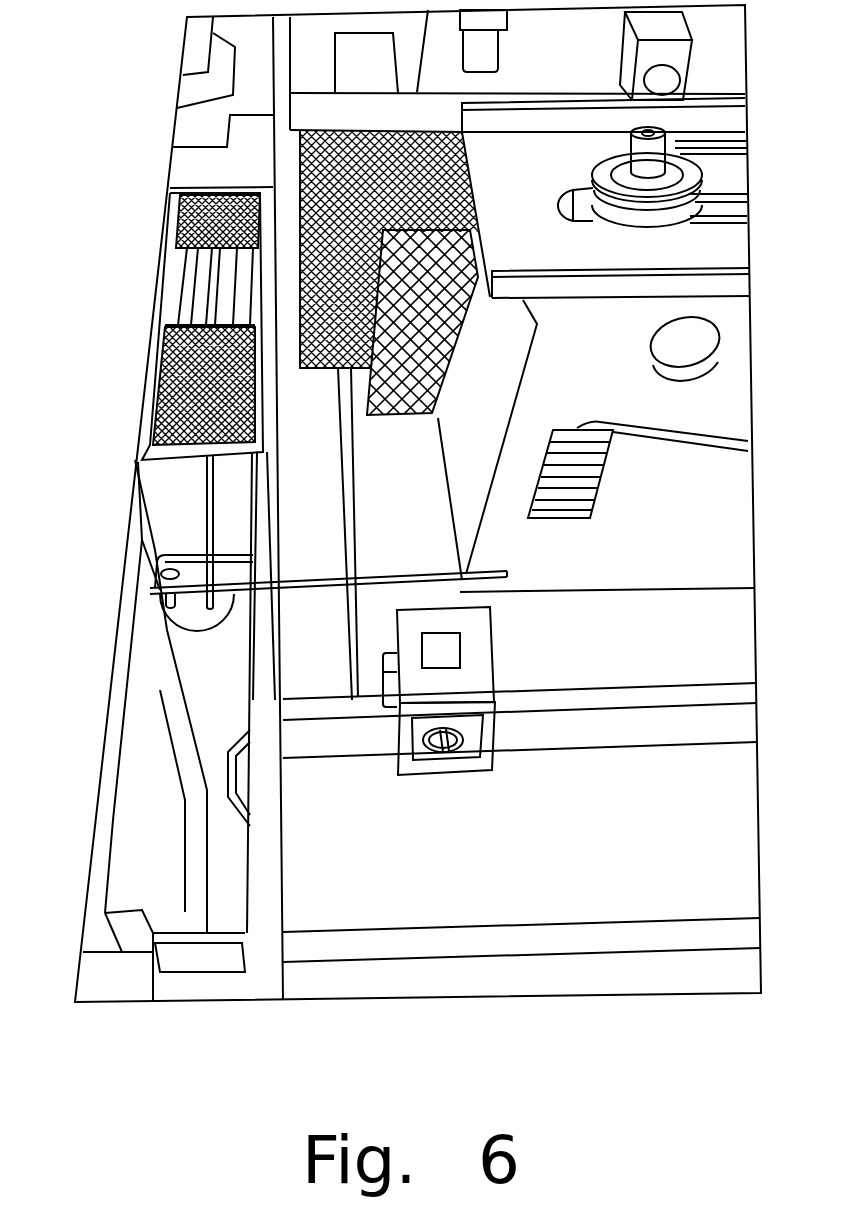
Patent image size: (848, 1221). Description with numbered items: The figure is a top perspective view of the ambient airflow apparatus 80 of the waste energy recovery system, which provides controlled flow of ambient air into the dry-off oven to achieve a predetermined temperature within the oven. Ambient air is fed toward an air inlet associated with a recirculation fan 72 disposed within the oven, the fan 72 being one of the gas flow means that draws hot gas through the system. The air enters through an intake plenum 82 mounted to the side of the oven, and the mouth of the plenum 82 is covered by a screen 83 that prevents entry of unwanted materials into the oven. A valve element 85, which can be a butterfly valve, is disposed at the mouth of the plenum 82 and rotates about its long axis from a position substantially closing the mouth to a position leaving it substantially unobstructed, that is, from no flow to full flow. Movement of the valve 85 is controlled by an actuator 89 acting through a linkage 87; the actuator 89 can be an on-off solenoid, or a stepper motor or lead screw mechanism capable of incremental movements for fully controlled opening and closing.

The ambient airflow apparatus 80 is at (125, 359).
The valve element 85 is at (180, 283).
The screen 83 is at (156, 392).
The intake plenum 82 is at (172, 473).
The linkage 87 is at (165, 628).
The actuator 89 is at (475, 655).
The recirculation fan 72 is at (722, 347).